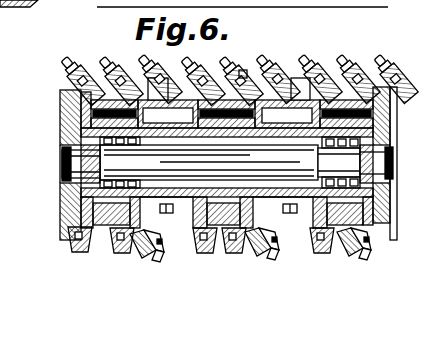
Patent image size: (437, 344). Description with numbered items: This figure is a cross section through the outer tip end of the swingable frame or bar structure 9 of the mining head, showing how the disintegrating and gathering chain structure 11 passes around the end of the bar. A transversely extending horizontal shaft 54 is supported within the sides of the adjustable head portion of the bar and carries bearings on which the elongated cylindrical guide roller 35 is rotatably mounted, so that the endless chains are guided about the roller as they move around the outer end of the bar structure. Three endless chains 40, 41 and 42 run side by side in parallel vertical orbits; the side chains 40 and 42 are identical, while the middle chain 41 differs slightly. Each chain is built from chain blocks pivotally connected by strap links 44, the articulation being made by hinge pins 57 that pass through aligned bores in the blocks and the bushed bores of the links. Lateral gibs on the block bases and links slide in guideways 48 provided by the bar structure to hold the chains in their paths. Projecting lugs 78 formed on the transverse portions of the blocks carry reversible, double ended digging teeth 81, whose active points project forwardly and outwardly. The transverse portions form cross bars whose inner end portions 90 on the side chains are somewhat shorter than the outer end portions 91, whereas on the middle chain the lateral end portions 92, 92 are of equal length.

The frame or bar structure 9 is at (60, 116).
The disintegrating and gathering chain structure 11 is at (70, 243).
The guide roller 35 is at (278, 197).
The endless chain 40 is at (358, 254).
The endless chain 41 is at (237, 250).
The endless chain 42 is at (113, 240).
The strap links 44 is at (232, 215).
The guideways 48 is at (82, 203).
The horizontal shaft 54 is at (197, 172).
The hinge pins 57 is at (242, 78).
The projecting lugs 78 is at (82, 240).
The digging teeth 81 is at (146, 62).
The inner lateral end portions 90 is at (160, 80).
The outer lateral end portions 91 is at (81, 82).
The lateral end portions 92 is at (188, 80).